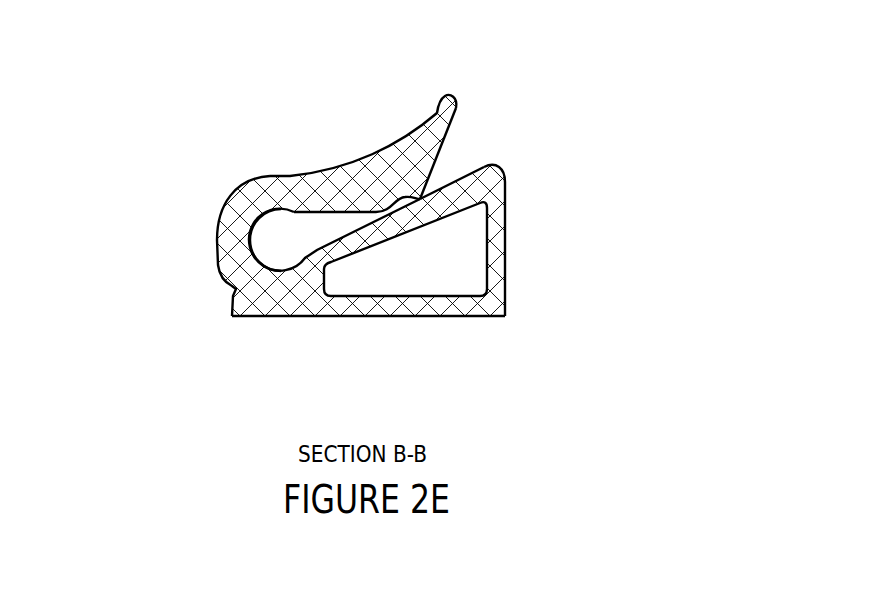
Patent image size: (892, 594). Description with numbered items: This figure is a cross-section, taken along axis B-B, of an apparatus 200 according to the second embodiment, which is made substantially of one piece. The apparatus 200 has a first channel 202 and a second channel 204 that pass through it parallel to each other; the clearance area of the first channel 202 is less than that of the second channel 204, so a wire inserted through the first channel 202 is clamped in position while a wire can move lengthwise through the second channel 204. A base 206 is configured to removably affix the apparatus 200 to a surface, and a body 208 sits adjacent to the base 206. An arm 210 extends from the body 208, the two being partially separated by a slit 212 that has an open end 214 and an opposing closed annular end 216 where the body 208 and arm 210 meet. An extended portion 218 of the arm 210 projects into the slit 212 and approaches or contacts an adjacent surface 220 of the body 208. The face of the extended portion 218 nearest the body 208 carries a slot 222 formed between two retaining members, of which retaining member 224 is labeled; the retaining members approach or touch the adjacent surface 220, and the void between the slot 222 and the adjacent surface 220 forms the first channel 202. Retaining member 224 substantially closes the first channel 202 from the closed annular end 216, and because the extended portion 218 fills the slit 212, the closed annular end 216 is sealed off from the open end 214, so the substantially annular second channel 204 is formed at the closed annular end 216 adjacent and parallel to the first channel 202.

The apparatus 200 is at (380, 205).
The first channel 202 is at (395, 206).
The second channel 204 is at (277, 239).
The base 206 is at (265, 317).
The body 208 is at (505, 240).
The arm 210 is at (457, 108).
The slit 212 is at (265, 177).
The open end 214 is at (253, 243).
The closed annular end 216 is at (418, 199).
The extended portion 218 is at (442, 148).
The adjacent surface 220 is at (473, 168).
The slot 222 is at (395, 196).
The retaining member 224 is at (345, 175).